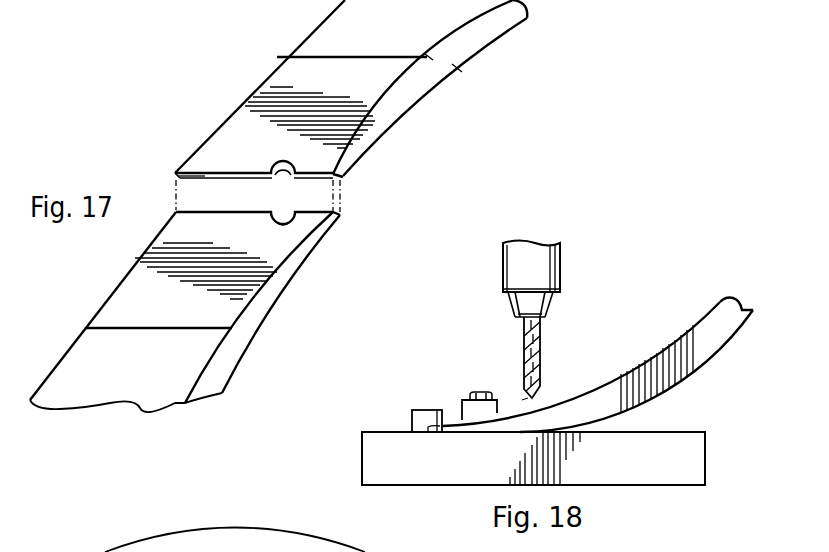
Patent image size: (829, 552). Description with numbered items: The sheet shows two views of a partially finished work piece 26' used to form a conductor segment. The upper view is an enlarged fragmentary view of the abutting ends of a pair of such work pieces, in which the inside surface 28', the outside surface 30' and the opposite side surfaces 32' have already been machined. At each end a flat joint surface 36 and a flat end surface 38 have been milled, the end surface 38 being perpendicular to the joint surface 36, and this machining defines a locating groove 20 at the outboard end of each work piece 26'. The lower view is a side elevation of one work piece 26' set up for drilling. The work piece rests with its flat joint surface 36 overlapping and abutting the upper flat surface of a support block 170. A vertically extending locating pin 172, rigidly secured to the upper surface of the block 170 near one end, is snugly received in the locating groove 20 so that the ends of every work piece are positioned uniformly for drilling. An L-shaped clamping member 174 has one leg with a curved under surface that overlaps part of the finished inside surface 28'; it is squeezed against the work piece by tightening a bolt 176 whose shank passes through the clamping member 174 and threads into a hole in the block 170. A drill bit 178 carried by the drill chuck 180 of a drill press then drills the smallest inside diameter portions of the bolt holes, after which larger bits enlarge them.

In FIG. 17, the partially completed work piece 26' is at (271, 206).
In FIG. 18, the partially completed work piece 26' is at (598, 350).
In FIG. 17, the outside surface 30' is at (287, 196).
In FIG. 18, the outside surface 30' is at (636, 371).
In FIG. 17, the side surface 32' is at (385, 225).
In FIG. 17, the flat joint surface 36 is at (248, 107).
In FIG. 18, the flat joint surface 36 is at (497, 433).
In FIG. 17, the flat end surface 38 is at (200, 173).
In FIG. 17, the locating groove 20 is at (277, 222).
In FIG. 18, the locating groove 20 is at (438, 433).
In FIG. 18, the inside surface 28' is at (640, 368).
In FIG. 18, the support block 170 is at (643, 472).
In FIG. 18, the locating pin 172 is at (412, 412).
In FIG. 18, the L-shaped clamping member 174 is at (462, 403).
In FIG. 18, the bolt 176 is at (481, 390).
In FIG. 18, the drill bit 178 is at (538, 335).
In FIG. 18, the drill chuck 180 is at (558, 262).